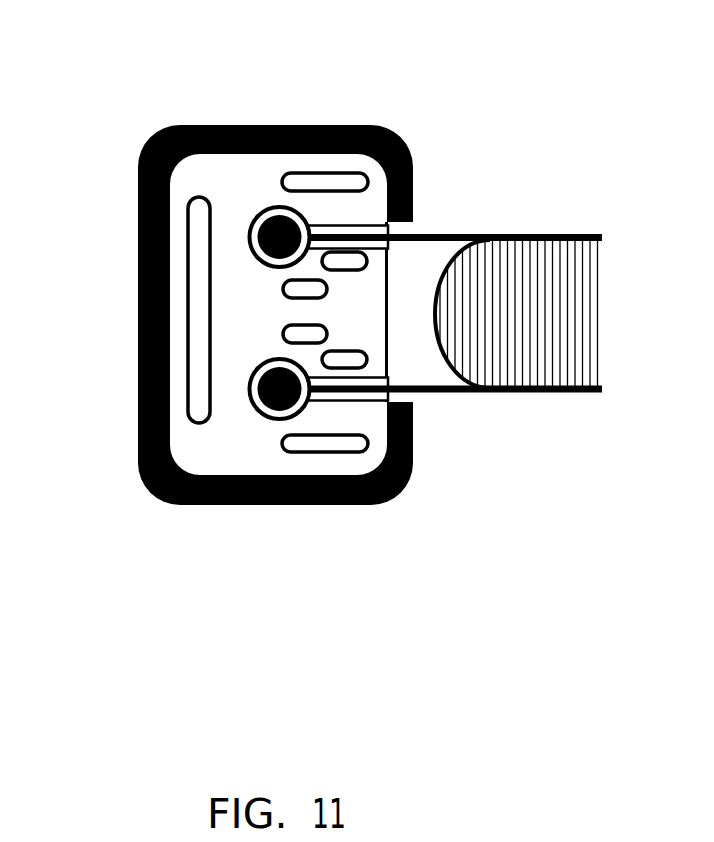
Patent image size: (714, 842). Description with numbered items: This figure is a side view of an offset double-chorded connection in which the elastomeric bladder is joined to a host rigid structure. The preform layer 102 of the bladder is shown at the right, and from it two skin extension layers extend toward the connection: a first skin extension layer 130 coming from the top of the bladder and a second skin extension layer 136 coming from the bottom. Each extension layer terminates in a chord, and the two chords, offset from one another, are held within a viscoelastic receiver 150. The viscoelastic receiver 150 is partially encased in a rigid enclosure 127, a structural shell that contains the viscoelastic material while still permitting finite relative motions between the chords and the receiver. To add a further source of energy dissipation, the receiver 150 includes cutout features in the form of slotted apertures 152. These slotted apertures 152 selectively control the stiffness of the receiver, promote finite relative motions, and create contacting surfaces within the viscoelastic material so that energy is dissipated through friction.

The preform layer 102 is at (598, 393).
The rigid enclosure 127 is at (277, 126).
The first skin extension layer 130 is at (428, 242).
The second skin extension layer 136 is at (428, 393).
The viscoelastic receiver 150 is at (228, 180).
The slotted aperture 152 is at (188, 312).